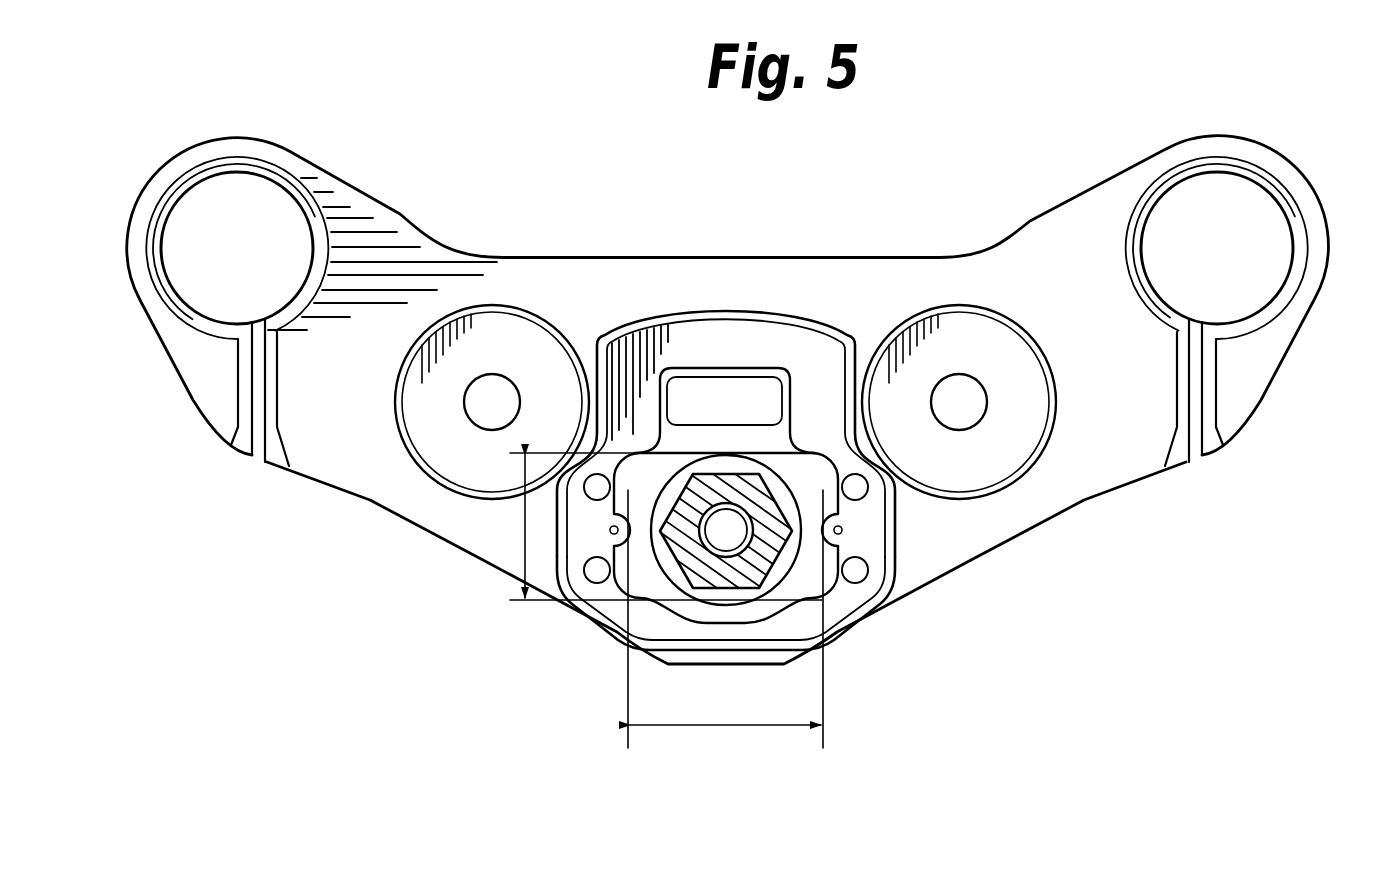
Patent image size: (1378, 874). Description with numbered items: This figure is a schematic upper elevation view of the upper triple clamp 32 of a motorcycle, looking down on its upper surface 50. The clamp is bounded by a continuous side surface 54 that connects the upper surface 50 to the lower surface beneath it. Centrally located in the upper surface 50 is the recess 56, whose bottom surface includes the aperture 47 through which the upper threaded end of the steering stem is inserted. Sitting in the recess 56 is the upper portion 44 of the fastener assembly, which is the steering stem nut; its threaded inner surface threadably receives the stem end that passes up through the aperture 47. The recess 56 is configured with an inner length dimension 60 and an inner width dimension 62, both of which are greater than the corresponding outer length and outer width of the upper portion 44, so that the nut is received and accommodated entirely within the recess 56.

The upper triple clamp 32 is at (986, 128).
The continuous side surface 54 is at (1263, 152).
The upper surface 50 is at (1116, 472).
The central recess 56 is at (690, 367).
The upper portion of the fastener assembly 44 is at (768, 494).
The aperture 47 is at (731, 503).
The inner width dimension 62 is at (523, 530).
The inner length dimension 60 is at (697, 727).